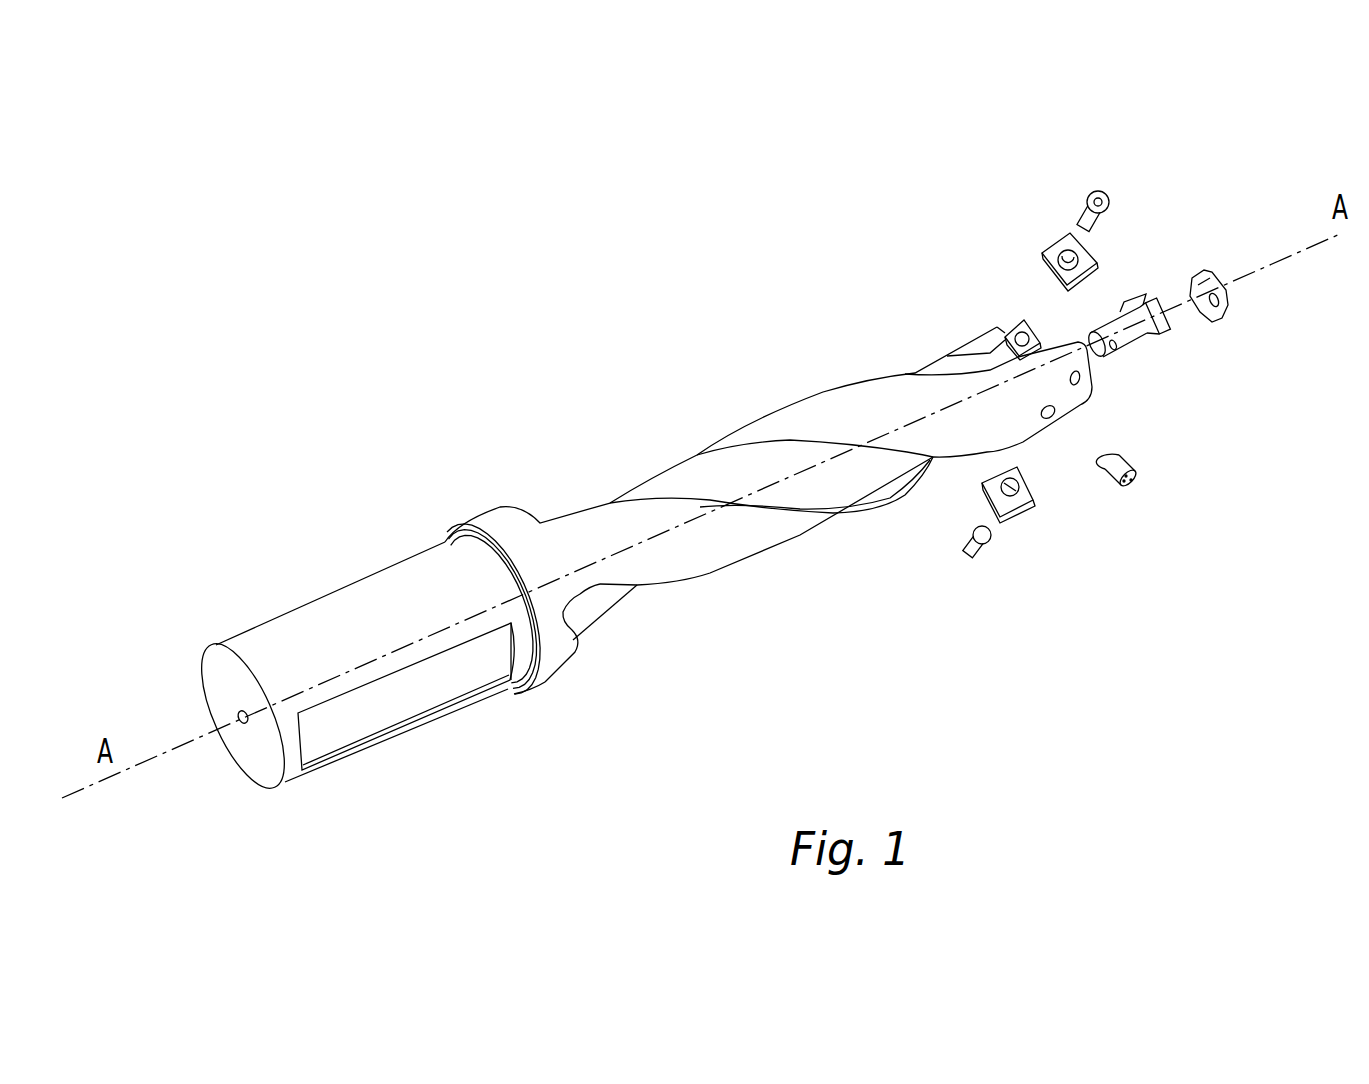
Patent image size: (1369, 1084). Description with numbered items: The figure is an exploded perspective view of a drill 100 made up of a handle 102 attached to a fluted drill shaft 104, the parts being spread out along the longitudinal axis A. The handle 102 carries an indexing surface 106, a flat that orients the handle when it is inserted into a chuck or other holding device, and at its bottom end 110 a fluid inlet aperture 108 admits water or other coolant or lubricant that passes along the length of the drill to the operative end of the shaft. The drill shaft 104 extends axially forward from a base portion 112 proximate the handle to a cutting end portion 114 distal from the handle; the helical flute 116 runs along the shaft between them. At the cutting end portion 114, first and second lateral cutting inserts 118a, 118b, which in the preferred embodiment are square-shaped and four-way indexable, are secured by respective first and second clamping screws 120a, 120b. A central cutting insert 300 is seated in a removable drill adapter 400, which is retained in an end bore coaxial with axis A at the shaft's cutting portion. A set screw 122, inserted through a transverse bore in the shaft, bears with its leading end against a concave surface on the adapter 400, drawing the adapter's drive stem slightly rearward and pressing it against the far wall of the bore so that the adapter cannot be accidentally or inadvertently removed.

The drill 100 is at (428, 158).
The handle 102 is at (402, 536).
The fluted drill shaft 104 is at (792, 396).
The indexing surface 106 is at (402, 697).
The fluid inlet aperture 108 is at (238, 712).
The bottom end 110 is at (257, 767).
The base portion 112 is at (559, 701).
The cutting end portion 114 is at (1013, 310).
The flute 116 is at (688, 484).
The first lateral cutting insert 118a is at (1065, 233).
The second lateral cutting insert 118b is at (1020, 510).
The first clamping screw 120a is at (1098, 191).
The second clamping screw 120b is at (975, 560).
The set screw 122 is at (1137, 470).
The central cutting insert 300 is at (1228, 310).
The removable drill adapter 400 is at (1172, 338).